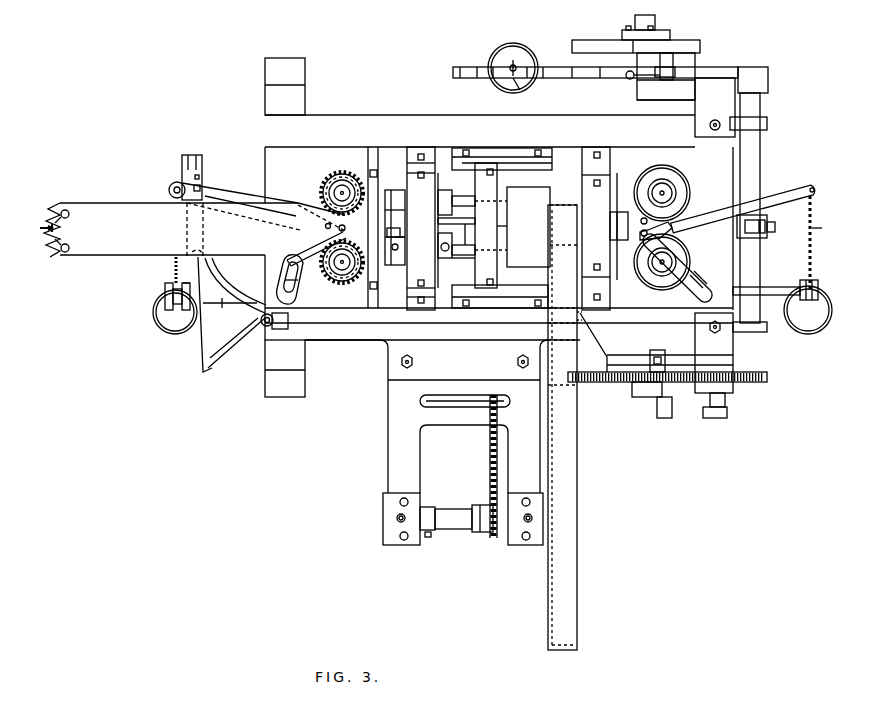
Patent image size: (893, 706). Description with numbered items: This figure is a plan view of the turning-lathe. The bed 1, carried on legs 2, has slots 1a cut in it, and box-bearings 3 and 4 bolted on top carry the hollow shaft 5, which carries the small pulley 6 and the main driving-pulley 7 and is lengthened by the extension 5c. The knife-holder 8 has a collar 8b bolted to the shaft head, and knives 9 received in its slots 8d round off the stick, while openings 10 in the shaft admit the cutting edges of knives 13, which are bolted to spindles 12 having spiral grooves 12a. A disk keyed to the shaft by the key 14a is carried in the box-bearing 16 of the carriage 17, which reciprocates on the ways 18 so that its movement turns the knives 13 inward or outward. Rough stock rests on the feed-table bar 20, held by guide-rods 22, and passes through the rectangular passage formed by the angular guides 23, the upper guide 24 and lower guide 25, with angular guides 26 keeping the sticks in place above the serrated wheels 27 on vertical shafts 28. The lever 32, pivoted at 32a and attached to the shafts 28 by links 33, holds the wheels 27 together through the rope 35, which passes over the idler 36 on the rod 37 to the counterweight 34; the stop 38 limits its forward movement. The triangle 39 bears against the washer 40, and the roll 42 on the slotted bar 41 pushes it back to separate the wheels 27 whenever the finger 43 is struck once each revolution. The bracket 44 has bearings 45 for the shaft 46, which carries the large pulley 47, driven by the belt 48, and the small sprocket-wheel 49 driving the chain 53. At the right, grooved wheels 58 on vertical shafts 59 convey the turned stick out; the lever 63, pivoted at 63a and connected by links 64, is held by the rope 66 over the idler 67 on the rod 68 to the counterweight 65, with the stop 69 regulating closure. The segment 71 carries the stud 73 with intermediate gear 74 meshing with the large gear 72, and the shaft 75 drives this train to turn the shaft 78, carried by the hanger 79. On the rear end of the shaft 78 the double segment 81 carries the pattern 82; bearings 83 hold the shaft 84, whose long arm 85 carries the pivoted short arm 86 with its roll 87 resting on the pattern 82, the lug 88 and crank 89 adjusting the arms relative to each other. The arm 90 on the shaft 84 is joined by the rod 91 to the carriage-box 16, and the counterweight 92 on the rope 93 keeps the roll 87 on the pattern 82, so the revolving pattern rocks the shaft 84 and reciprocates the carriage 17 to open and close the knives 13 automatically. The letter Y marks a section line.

The bed 1 is at (497, 130).
The slots 1a is at (645, 280).
The legs 2 is at (740, 398).
The box-bearing 3 is at (422, 228).
The box-bearing 4 is at (596, 228).
The hollow shaft 5 is at (464, 230).
The extension 5c is at (612, 216).
The small pulley 6 is at (566, 210).
The main driving-pulley 7 is at (528, 227).
The knife-holder 8 is at (394, 219).
The collar 8b is at (404, 204).
The slots 8d is at (398, 220).
The knives 9 is at (397, 229).
The openings 10 is at (456, 223).
The spindles 12 is at (479, 228).
The spiral groove 12a is at (474, 256).
The knives 13 is at (448, 227).
The key 14a is at (502, 226).
The box-bearing 16 is at (486, 225).
The carriage 17 is at (515, 157).
The ways 18 is at (468, 150).
The bar 20 is at (195, 230).
The guide-rods 22 is at (73, 231).
The angular guides 23 is at (373, 158).
The guide 24 is at (396, 242).
The guide 25 is at (396, 214).
The angular guides 26 is at (390, 188).
The serrated wheels 27 is at (340, 226).
The vertical shafts 28 is at (338, 180).
The lever 32 is at (218, 202).
The pivot 32a is at (300, 245).
The links 33 is at (326, 226).
The counterweight 34 is at (175, 312).
The rope 35 is at (174, 281).
The idler 36 is at (165, 298).
The rod 37 is at (222, 287).
The adjustable stop 38 is at (282, 291).
The triangle 39 is at (232, 283).
The washer 40 is at (190, 296).
The bar 41 is at (424, 315).
The roll 42 is at (258, 328).
The finger 43 is at (645, 352).
The bracket 44 is at (420, 416).
The bearings 45 is at (412, 540).
The shaft 46 is at (456, 530).
The large pulley 47 is at (550, 618).
The belt 48 is at (567, 336).
The small sprocket-wheel 49 is at (480, 514).
The chain 53 is at (489, 458).
The grooved wheels 58 is at (675, 228).
The vertical shafts 59 is at (672, 190).
The lever 63 is at (772, 200).
The pivot 63a is at (677, 224).
The links 64 is at (690, 195).
The counterweight 65 is at (808, 310).
The rope 66 is at (811, 258).
The idler 67 is at (816, 290).
The rod 68 is at (774, 292).
The stop 69 is at (704, 255).
The segment 71 is at (733, 359).
The large gear 72 is at (622, 382).
The stud 73 is at (727, 410).
The intermediate gear 74 is at (767, 377).
The shaft 75 is at (665, 418).
The shaft 78 is at (637, 90).
The hanger 79 is at (637, 105).
The double segment 81 is at (658, 32).
The pattern 82 is at (588, 44).
The bearings 83 is at (767, 124).
The shaft 84 is at (760, 153).
The long arm 85 is at (472, 78).
The short arm 86 is at (744, 67).
The roll 87 is at (666, 44).
The lug 88 is at (674, 62).
The crank 89 is at (655, 78).
The arm 90 is at (750, 214).
The rod 91 is at (755, 238).
The counterweight 92 is at (513, 68).
The rope 93 is at (528, 88).
The section line Y is at (429, 228).